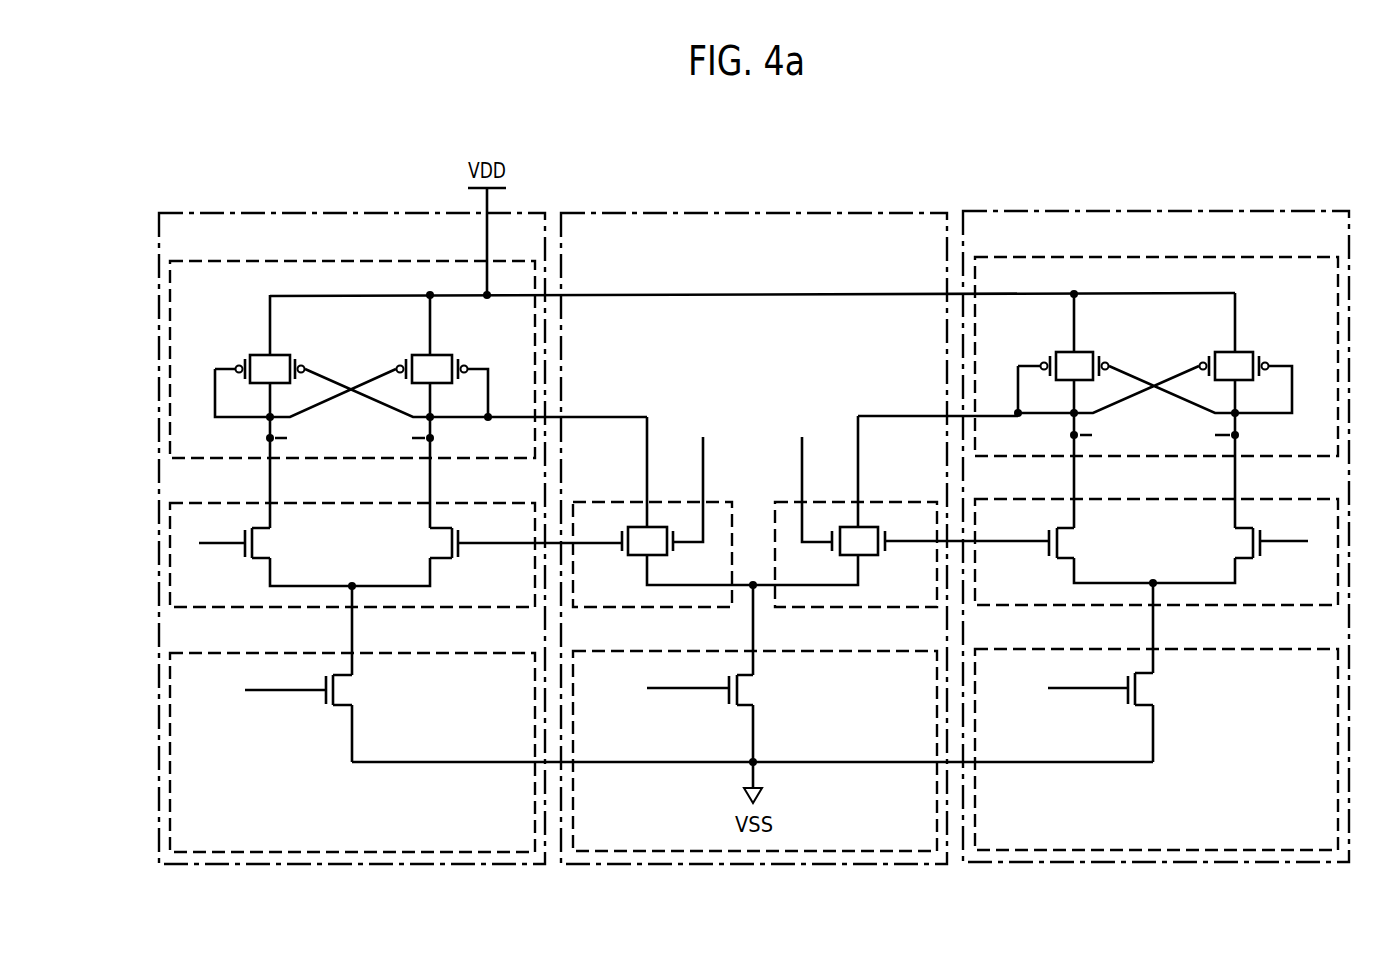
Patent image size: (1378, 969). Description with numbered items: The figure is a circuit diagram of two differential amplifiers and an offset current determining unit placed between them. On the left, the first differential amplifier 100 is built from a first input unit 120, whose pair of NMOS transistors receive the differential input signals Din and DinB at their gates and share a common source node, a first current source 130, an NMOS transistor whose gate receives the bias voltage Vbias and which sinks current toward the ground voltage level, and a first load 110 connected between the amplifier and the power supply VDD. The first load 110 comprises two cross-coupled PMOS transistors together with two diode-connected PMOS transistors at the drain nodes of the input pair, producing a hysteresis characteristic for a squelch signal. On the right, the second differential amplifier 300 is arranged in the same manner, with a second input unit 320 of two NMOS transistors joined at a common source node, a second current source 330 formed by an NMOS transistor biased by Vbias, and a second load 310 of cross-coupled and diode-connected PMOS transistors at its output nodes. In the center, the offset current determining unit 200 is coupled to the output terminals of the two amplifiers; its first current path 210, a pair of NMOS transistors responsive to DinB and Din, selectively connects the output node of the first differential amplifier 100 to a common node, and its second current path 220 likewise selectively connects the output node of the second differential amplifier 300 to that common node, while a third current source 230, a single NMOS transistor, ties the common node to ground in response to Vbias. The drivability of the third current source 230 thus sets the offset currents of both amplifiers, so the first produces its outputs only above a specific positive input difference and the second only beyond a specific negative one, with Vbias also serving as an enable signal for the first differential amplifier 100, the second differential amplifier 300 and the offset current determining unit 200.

The first differential amplifier 100 is at (285, 214).
The first load 110 is at (195, 262).
The first input unit 120 is at (195, 504).
The first current source 130 is at (195, 654).
The offset current determining unit 200 is at (688, 214).
The first current path 210 is at (716, 503).
The second current path 220 is at (885, 503).
The third current source 230 is at (885, 652).
The second differential amplifier 300 is at (1088, 212).
The second load 310 is at (1001, 258).
The second input unit 320 is at (1001, 500).
The second current source 330 is at (1001, 650).